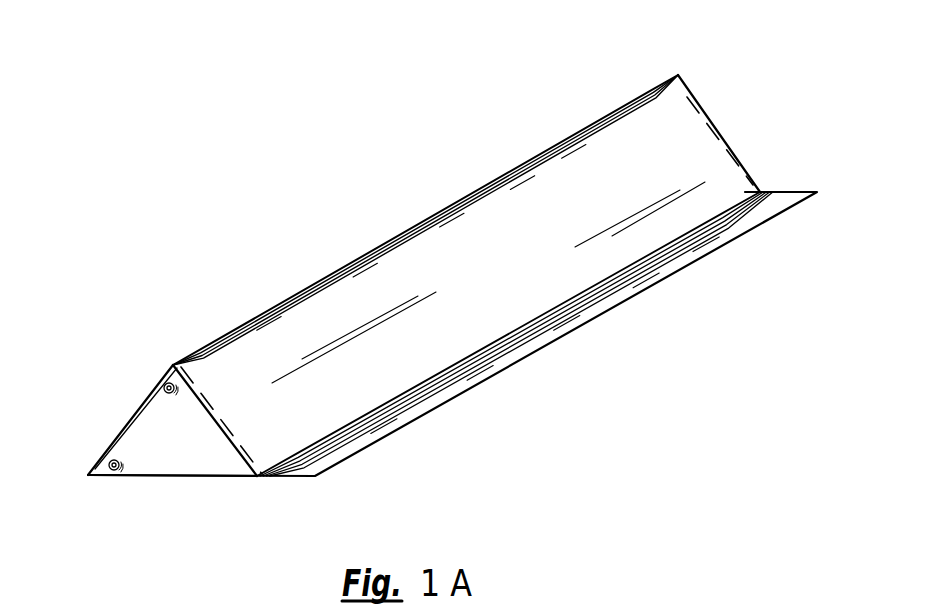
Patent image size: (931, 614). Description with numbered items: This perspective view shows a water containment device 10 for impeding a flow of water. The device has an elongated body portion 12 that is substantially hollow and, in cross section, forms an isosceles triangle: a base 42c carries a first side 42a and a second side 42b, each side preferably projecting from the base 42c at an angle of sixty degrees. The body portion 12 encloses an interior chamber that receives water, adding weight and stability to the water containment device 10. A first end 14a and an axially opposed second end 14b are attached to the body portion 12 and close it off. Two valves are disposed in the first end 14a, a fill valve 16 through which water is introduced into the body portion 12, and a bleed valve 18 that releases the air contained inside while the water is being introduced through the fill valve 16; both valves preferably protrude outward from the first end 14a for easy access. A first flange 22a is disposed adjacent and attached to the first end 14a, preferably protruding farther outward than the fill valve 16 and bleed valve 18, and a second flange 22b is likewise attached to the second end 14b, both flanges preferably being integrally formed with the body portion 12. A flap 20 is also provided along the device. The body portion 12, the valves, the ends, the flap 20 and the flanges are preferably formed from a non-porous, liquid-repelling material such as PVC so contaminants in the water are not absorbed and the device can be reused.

The water containment device 10 is at (337, 170).
The body portion 12 is at (335, 282).
The first end 14a is at (137, 487).
The second end 14b is at (697, 80).
The fill valve 16 is at (109, 461).
The bleed valve 18 is at (163, 383).
The flap 20 is at (371, 441).
The first flange 22a is at (189, 361).
The second flange 22b is at (732, 151).
The first side 42a is at (135, 413).
The second side 42b is at (530, 307).
The base 42c is at (200, 477).